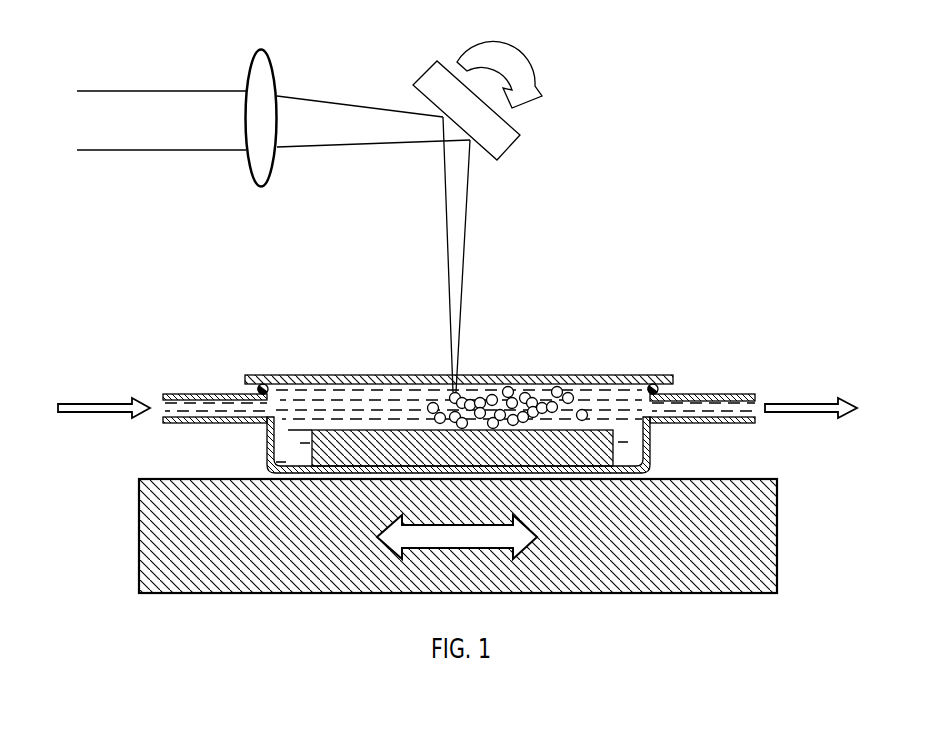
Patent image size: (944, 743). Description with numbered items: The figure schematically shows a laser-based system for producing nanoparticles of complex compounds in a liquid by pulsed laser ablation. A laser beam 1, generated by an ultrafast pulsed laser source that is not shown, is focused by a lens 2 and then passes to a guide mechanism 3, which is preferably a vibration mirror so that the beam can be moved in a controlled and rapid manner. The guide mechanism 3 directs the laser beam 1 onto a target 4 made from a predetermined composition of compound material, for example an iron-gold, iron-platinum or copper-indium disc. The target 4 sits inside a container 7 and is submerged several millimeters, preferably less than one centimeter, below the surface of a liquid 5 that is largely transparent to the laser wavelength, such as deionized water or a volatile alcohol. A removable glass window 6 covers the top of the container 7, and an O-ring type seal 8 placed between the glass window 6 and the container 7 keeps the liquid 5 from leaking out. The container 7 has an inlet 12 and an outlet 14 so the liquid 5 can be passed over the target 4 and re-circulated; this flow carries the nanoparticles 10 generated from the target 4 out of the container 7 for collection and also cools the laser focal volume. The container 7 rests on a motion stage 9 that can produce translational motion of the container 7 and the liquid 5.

The laser beam 1 is at (178, 91).
The lens 2 is at (260, 49).
The guide mechanism 3 is at (513, 140).
The target 4 is at (350, 430).
The liquid 5 is at (605, 396).
The glass window 6 is at (657, 383).
The container 7 is at (650, 452).
The O-ring type seal 8 is at (263, 383).
The motion stage 9 is at (139, 537).
The nanoparticles 10 is at (532, 400).
The inlet 12 is at (180, 394).
The outlet 14 is at (720, 394).